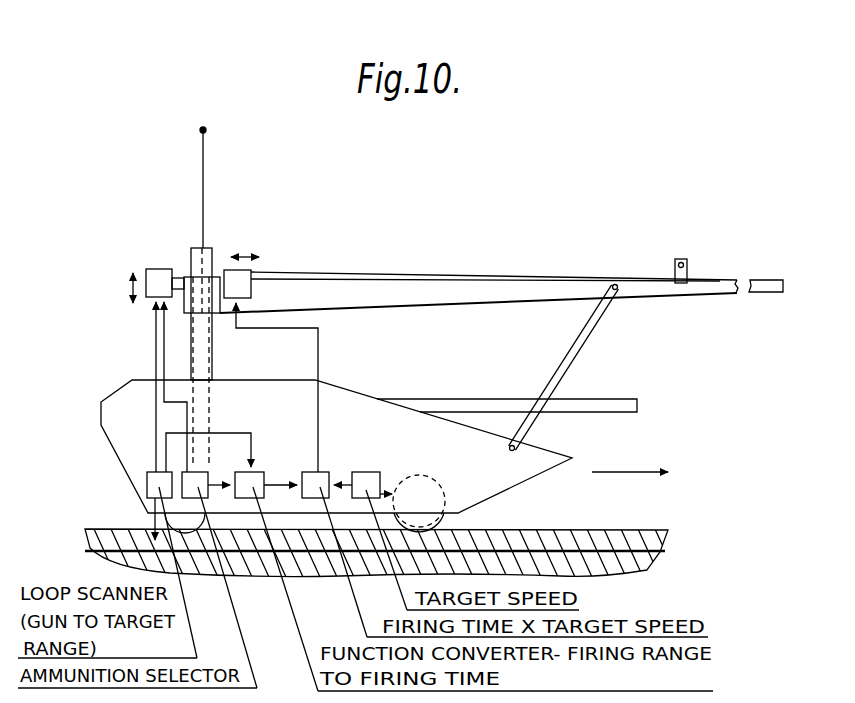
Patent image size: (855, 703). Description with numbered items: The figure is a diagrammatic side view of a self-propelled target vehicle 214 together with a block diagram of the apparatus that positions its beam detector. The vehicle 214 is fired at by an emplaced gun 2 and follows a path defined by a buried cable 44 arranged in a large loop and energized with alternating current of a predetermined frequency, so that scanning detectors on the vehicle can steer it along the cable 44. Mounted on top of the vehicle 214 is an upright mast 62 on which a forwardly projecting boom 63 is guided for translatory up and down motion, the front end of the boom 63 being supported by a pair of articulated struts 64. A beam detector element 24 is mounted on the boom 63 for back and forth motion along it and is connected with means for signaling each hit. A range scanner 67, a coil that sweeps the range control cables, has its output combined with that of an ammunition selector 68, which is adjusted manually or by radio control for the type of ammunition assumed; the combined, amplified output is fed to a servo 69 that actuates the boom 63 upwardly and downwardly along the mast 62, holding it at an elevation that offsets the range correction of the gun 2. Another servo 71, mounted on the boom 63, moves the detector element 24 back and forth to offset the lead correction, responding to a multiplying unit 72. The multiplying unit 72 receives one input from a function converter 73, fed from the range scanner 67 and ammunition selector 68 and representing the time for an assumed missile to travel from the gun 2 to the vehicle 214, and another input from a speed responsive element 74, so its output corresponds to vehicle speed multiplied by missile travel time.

The emplaced gun 2 is at (497, 400).
The beam detector element 24 is at (690, 262).
The buried cable 44 is at (565, 548).
The upright mast 62 is at (212, 357).
The forwardly projecting boom 63 is at (462, 283).
The articulated struts 64 is at (563, 364).
The range scanner 67 is at (147, 482).
The ammunition selector 68 is at (207, 475).
The servo 69 is at (158, 268).
The servo 71 is at (237, 280).
The multiplying unit 72 is at (327, 475).
The function converter 73 is at (259, 475).
The speed responsive element 74 is at (370, 476).
The self-propelled target vehicle 214 is at (332, 402).